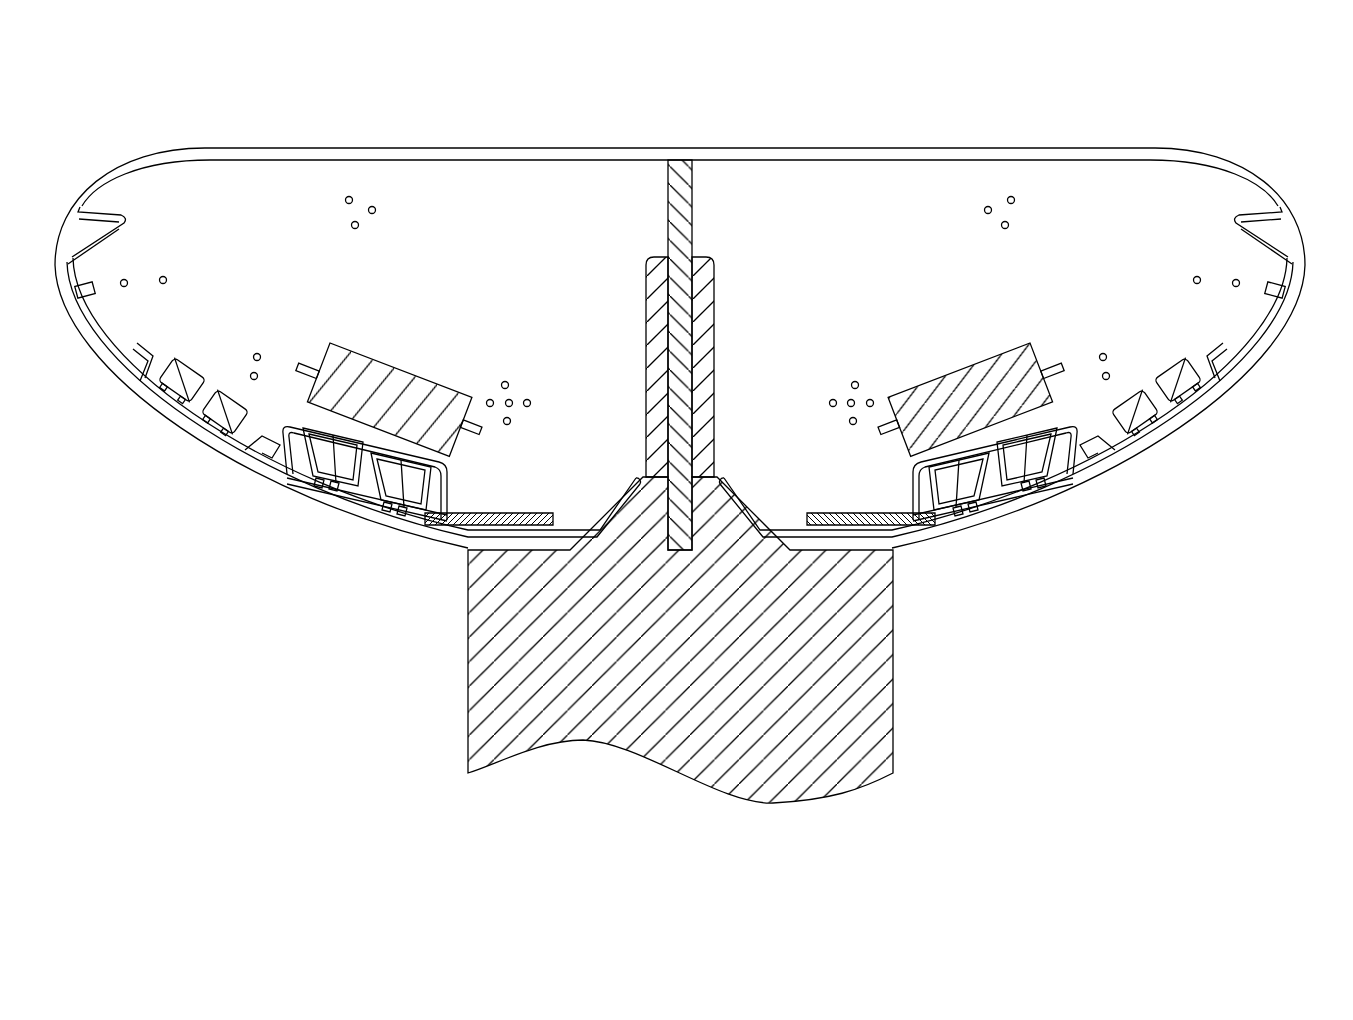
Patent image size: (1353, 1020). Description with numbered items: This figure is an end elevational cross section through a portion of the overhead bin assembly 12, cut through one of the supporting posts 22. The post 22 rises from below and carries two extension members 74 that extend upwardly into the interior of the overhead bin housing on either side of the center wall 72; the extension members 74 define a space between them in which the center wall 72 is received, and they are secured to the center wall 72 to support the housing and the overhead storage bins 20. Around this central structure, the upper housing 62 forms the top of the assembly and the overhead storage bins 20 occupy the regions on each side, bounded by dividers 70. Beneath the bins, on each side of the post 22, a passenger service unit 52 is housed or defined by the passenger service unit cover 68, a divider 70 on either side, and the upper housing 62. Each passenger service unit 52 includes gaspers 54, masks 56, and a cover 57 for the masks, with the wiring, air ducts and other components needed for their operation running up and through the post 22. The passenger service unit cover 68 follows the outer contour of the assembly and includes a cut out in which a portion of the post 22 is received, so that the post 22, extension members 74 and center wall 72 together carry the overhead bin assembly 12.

The overhead bin assembly 12 is at (1216, 139).
The overhead storage bin 20 is at (246, 176).
The post 22 is at (880, 718).
The passenger service unit 52 is at (262, 578).
The gasper 54 is at (242, 410).
The mask 56 is at (338, 483).
The cover for the masks 57 is at (318, 485).
The upper housing 62 is at (855, 148).
The passenger service unit cover 68 is at (91, 337).
The divider 70 is at (555, 277).
The center wall 72 is at (684, 206).
The extension member 74 is at (658, 352).